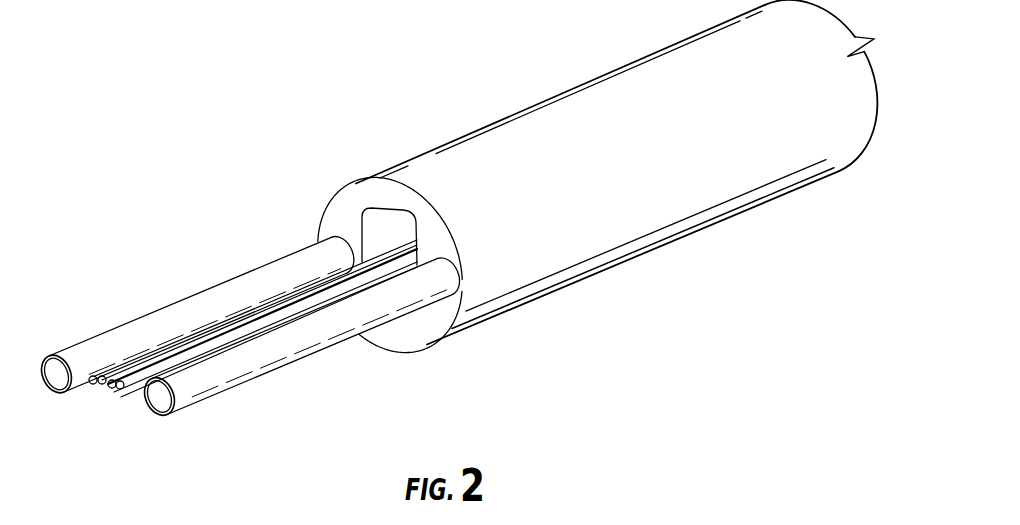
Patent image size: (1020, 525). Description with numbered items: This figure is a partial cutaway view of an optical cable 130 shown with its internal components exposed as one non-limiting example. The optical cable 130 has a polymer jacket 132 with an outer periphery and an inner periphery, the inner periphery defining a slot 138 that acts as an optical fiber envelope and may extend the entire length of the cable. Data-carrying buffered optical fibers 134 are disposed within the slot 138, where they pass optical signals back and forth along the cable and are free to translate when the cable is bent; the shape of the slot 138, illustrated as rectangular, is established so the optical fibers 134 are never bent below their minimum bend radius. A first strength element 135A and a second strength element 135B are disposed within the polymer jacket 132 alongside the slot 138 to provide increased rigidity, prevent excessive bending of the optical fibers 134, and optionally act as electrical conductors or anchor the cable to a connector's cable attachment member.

The optical cable 130 is at (316, 93).
The polymer jacket 132 is at (338, 214).
The buffered optical fibers 134 is at (107, 399).
The first strength element 135A is at (148, 312).
The second strength element 135B is at (258, 348).
The slot 138 is at (388, 222).